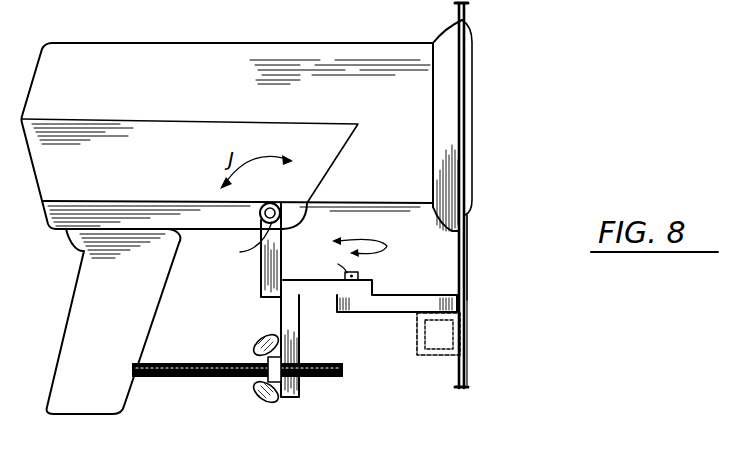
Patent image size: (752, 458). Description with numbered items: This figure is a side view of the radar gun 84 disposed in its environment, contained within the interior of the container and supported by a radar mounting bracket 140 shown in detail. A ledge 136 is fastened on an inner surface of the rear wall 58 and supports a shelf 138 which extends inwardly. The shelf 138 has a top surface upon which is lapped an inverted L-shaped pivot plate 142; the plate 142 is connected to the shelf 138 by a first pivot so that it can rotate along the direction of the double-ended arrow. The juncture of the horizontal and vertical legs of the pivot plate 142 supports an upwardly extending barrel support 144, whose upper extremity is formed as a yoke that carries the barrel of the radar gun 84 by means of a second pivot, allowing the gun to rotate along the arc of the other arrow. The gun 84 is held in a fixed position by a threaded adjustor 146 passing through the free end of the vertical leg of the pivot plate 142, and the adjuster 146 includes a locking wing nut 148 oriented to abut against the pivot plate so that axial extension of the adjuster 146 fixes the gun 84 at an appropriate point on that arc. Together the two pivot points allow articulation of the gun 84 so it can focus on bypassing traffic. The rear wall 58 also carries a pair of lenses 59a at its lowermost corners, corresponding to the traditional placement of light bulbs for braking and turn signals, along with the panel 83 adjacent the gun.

The radar gun 84 is at (172, 70).
The end panel 83 is at (447, 38).
The lenses 59a is at (470, 40).
The rear wall 58 is at (467, 262).
The barrel support 144 is at (272, 279).
The inverted L-shaped pivot plate 142 is at (288, 322).
The radar mounting bracket 140 is at (357, 375).
The shelf 138 is at (392, 305).
The ledge 136 is at (443, 357).
The threaded adjustor 146 is at (202, 380).
The locking wing nut 148 is at (258, 397).